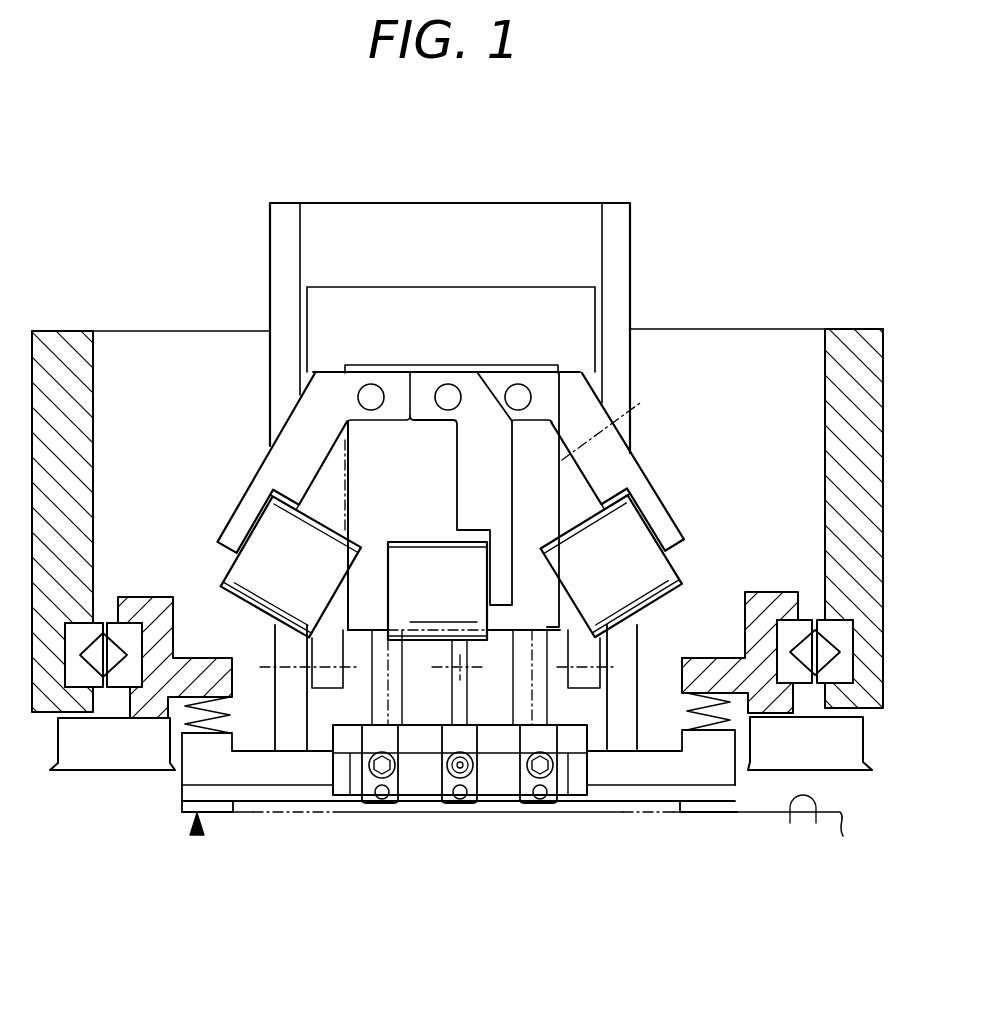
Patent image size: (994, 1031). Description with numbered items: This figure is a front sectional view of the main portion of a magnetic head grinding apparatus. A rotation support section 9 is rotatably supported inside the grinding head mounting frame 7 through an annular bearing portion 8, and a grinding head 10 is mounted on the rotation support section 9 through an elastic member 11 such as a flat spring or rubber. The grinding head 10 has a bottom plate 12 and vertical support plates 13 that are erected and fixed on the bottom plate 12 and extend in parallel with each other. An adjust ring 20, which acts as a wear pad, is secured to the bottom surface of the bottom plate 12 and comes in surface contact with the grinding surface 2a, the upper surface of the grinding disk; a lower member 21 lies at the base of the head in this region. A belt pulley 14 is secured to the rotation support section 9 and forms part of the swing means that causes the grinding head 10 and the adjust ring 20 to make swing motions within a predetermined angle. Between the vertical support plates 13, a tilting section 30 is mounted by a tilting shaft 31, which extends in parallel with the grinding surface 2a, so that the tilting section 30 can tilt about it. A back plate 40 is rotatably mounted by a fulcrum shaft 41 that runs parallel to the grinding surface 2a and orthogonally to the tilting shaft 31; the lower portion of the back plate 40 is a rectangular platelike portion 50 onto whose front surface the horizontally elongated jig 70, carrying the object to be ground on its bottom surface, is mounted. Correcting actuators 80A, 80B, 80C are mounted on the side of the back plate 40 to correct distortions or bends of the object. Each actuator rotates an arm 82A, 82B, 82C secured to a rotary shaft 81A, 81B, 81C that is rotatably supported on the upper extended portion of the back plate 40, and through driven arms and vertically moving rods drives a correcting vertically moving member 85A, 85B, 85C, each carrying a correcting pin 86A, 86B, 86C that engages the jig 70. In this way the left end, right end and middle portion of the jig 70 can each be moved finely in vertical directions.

The grinding surface 2a is at (808, 805).
The grinding head mounting frame 7 is at (770, 328).
The annular bearing portion 8 is at (795, 620).
The rotation support section 9 is at (752, 592).
The grinding head 10 is at (608, 200).
The elastic member 11 is at (690, 713).
The bottom plate 12 is at (262, 772).
The vertical support plates 13 is at (277, 238).
The belt pulley 14 is at (797, 748).
The adjust ring 20 is at (197, 835).
The base plate 21 is at (190, 797).
The tilting section 30 is at (415, 303).
The tilting shaft 31 is at (262, 667).
The back plate 40 is at (623, 437).
The fulcrum shaft 41 is at (463, 667).
The rectangular platelike portion 50 is at (325, 800).
The horizontally elongated jig 70 is at (348, 805).
The correcting actuator 80A is at (230, 578).
The correcting actuator 80B is at (652, 603).
The correcting actuator 80C is at (417, 553).
The rotary shaft 81A is at (371, 384).
The rotary shaft 81B is at (518, 384).
The rotary shaft 81C is at (448, 384).
The arm 82A is at (256, 477).
The arm 82B is at (647, 492).
The arm 82C is at (467, 468).
The correcting vertically moving member 85A is at (373, 737).
The correcting vertically moving member 85B is at (557, 737).
The correcting vertically moving member 85C is at (490, 797).
The correcting pin 86A is at (388, 800).
The correcting pin 86B is at (548, 800).
The correcting pin 86C is at (467, 800).